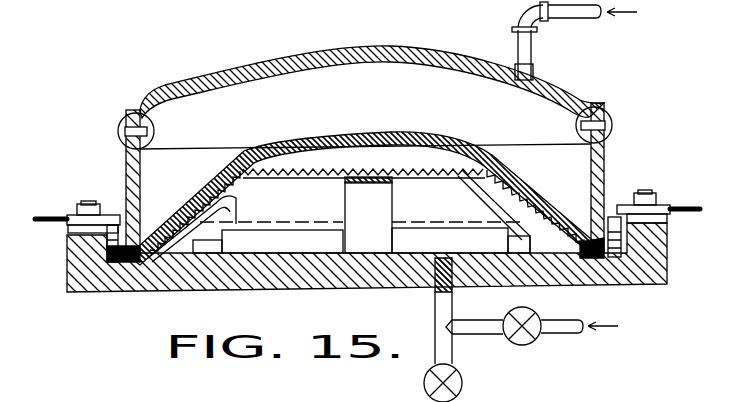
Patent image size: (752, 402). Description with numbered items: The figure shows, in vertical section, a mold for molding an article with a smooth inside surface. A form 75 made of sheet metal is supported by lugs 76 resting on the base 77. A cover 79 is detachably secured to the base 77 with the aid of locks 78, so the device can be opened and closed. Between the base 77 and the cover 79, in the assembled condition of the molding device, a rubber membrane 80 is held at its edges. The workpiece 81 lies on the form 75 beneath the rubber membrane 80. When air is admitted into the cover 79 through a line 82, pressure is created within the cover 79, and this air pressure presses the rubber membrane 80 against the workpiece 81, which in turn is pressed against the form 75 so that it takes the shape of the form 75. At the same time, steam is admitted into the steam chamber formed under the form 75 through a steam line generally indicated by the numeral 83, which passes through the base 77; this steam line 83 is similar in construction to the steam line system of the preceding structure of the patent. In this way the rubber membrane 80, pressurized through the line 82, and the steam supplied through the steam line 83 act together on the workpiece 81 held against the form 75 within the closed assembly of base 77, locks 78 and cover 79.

The form 75 is at (478, 197).
The lugs 76 is at (228, 247).
The base 77 is at (153, 288).
The locks 78 is at (90, 203).
The cover 79 is at (425, 22).
The rubber membrane 80 is at (415, 136).
The workpiece 81 is at (350, 165).
The line 82 is at (583, 18).
The steam line 83 is at (437, 300).